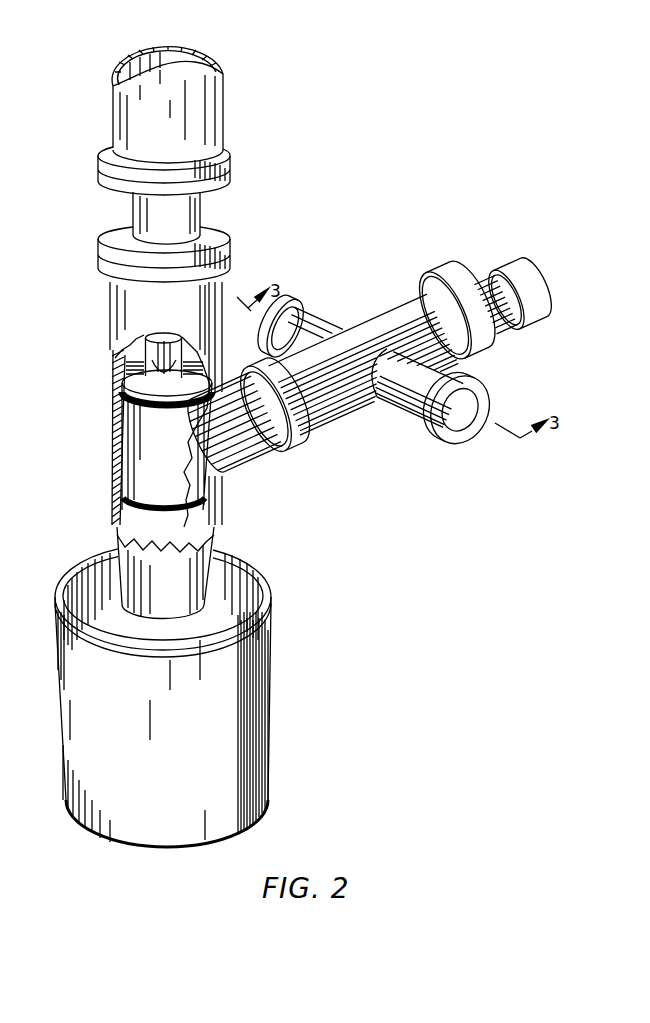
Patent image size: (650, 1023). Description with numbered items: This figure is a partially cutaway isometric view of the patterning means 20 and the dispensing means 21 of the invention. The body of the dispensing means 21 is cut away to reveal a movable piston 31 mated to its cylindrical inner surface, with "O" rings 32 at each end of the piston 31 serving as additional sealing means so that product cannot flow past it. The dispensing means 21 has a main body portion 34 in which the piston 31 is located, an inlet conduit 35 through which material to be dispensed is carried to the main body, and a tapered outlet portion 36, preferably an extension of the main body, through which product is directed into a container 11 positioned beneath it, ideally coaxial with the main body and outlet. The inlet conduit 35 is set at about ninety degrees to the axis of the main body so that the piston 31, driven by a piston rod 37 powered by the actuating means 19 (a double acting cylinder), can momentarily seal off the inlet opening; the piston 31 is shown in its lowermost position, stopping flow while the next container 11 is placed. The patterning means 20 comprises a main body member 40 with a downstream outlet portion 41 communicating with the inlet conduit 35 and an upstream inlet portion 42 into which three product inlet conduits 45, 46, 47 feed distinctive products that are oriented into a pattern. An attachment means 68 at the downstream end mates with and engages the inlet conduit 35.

The container 11 is at (68, 702).
The actuating means 19 is at (222, 118).
The patterning means 20 is at (366, 300).
The dispensing means 21 is at (111, 350).
The piston 31 is at (171, 477).
The "O" rings 32 is at (124, 392).
The main body portion 34 is at (186, 352).
The inlet conduit 35 is at (238, 462).
The tapered outlet portion 36 is at (212, 540).
The piston rod 37 is at (150, 355).
The main body member 40 is at (376, 354).
The downstream outlet portion 41 is at (338, 416).
The upstream inlet portion 42 is at (417, 304).
The product inlet conduit 45 is at (320, 323).
The product inlet conduit 46 is at (508, 282).
The product inlet conduit 47 is at (475, 396).
The attachment means 68 is at (300, 448).